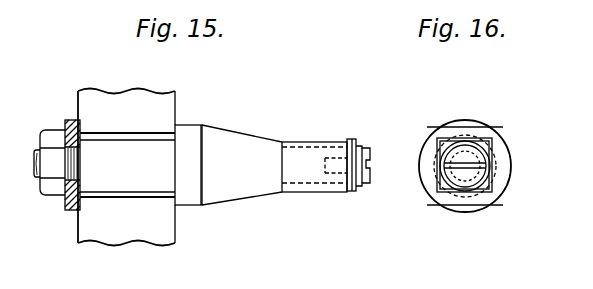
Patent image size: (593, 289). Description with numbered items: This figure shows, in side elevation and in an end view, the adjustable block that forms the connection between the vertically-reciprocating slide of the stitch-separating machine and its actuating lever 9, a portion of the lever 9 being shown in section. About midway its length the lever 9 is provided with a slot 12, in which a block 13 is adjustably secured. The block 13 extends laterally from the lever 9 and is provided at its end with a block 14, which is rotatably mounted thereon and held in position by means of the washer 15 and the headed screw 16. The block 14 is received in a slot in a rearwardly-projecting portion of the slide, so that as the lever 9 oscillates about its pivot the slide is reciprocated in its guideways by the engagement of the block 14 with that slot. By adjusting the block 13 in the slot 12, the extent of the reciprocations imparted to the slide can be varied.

In FIG. 15, the lever 9 is at (176, 93).
In FIG. 15, the slot 12 is at (172, 222).
In FIG. 15, the block 13 is at (194, 141).
In FIG. 16, the block 13 is at (478, 134).
In FIG. 15, the block 14 is at (299, 143).
In FIG. 16, the block 14 is at (492, 146).
In FIG. 15, the washer 15 is at (348, 140).
In FIG. 16, the washer 15 is at (438, 170).
In FIG. 15, the headed screw 16 is at (368, 153).
In FIG. 16, the headed screw 16 is at (470, 162).